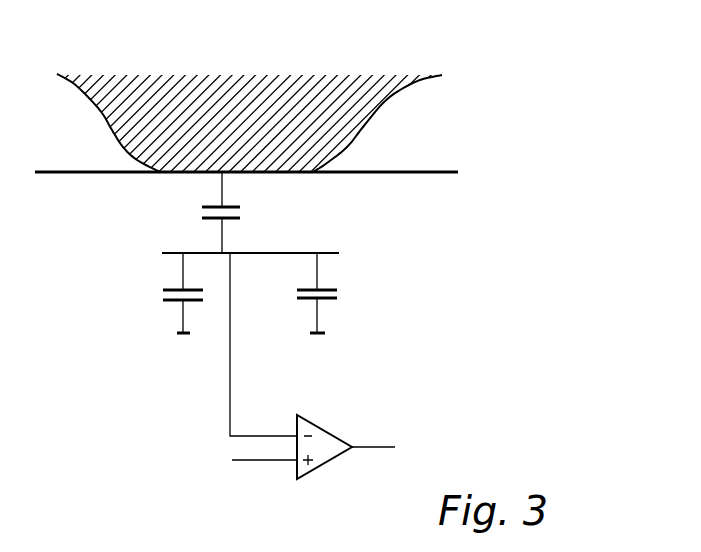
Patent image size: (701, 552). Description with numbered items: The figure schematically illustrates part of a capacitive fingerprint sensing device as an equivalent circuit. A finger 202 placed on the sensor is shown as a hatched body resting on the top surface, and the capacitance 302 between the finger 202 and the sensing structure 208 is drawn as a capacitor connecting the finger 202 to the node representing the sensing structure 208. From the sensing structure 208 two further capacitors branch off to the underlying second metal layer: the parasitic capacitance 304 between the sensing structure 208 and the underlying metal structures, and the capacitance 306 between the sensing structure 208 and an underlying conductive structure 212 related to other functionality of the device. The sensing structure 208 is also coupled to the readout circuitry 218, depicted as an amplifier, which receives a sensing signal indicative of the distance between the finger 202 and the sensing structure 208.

The finger 202 is at (350, 113).
The capacitance 302 is at (198, 213).
The sensing structure 208 is at (297, 252).
The capacitance 306 is at (160, 293).
The conductive structure 212 is at (178, 335).
The parasitic capacitance 304 is at (337, 295).
The readout circuitry 218 is at (325, 462).